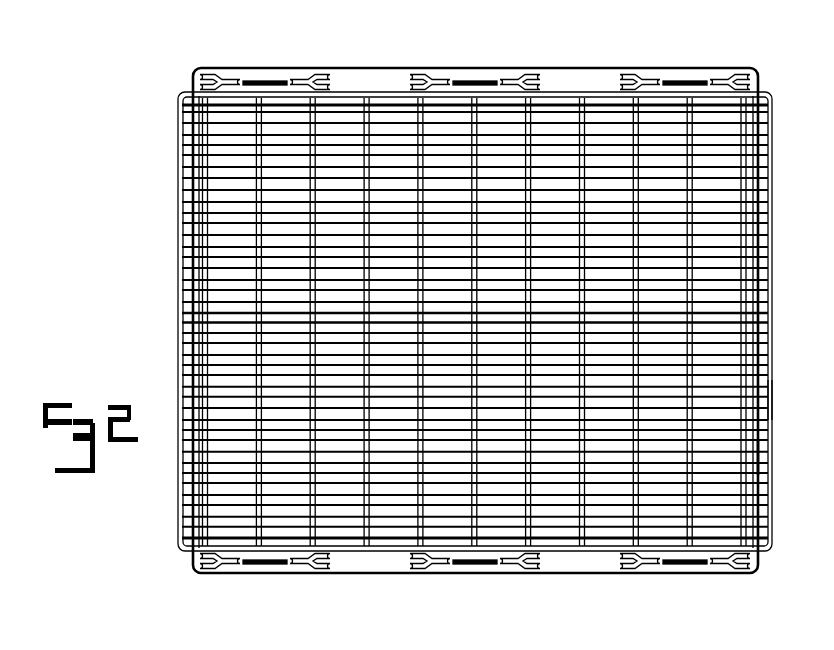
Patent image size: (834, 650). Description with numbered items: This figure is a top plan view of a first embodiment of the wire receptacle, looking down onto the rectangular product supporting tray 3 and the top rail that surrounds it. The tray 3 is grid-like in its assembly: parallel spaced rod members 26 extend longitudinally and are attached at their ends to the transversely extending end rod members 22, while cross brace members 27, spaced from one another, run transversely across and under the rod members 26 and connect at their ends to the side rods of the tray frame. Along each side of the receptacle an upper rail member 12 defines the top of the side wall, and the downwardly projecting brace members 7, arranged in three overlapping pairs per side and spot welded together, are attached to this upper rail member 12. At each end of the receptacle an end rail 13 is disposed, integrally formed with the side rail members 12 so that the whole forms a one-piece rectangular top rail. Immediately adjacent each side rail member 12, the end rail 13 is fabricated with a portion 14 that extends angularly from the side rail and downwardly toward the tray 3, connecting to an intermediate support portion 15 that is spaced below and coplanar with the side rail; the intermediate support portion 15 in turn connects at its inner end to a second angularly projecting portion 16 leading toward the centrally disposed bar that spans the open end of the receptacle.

The upper rail member 12 is at (549, 69).
The brace members 7 is at (497, 69).
The product supporting tray 3 is at (772, 249).
The cross brace members 27 is at (695, 170).
The rod members 26 is at (733, 216).
The end rail 13 is at (765, 403).
The end rod members 22 is at (771, 459).
The second angularly projecting portion 16 is at (826, 519).
The intermediate support portion 15 is at (830, 540).
The angularly extending portion 14 is at (822, 581).